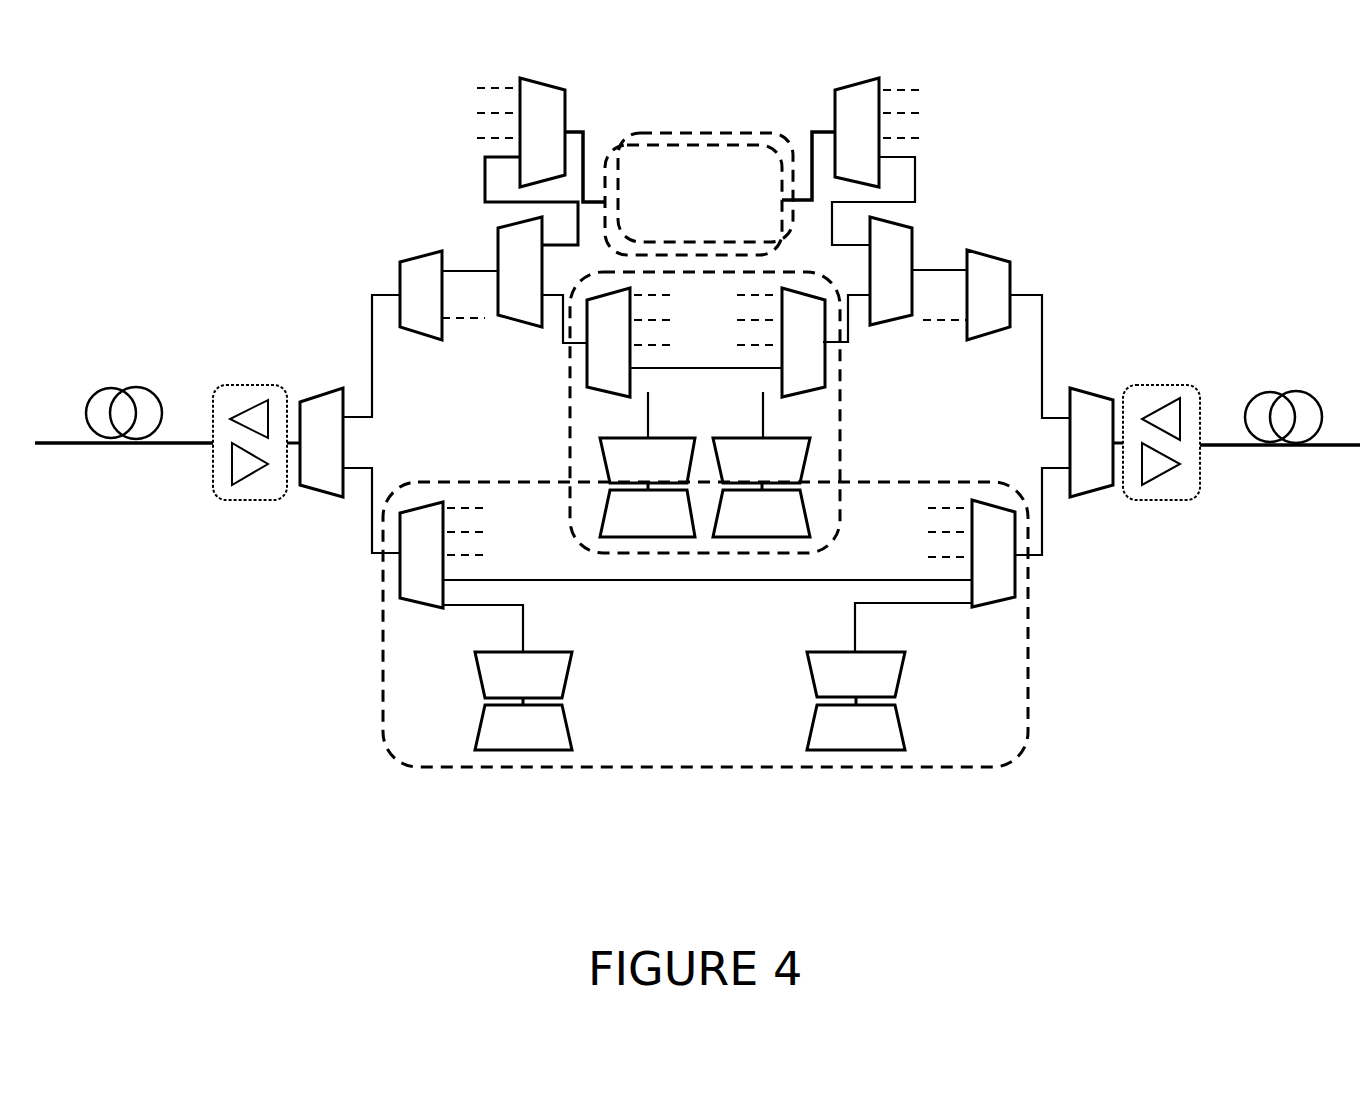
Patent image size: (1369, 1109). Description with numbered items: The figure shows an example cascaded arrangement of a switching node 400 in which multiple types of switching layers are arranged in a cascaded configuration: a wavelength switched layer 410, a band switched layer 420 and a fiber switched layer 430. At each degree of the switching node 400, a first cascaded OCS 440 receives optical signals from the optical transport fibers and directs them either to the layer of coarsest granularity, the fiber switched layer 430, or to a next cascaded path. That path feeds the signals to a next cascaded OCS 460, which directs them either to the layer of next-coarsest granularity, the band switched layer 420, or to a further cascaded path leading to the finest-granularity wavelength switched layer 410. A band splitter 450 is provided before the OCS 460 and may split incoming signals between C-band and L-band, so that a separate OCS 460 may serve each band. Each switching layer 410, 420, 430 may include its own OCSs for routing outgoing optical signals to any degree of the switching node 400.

The switching node 400 is at (697, 478).
The wavelength switched layer 410 is at (699, 194).
The band switched layer 420 is at (795, 412).
The fiber switched layer 430 is at (705, 624).
The first cascaded OCS 440 is at (317, 488).
The band splitter 450 is at (418, 257).
The next cascaded OCS 460 is at (522, 322).